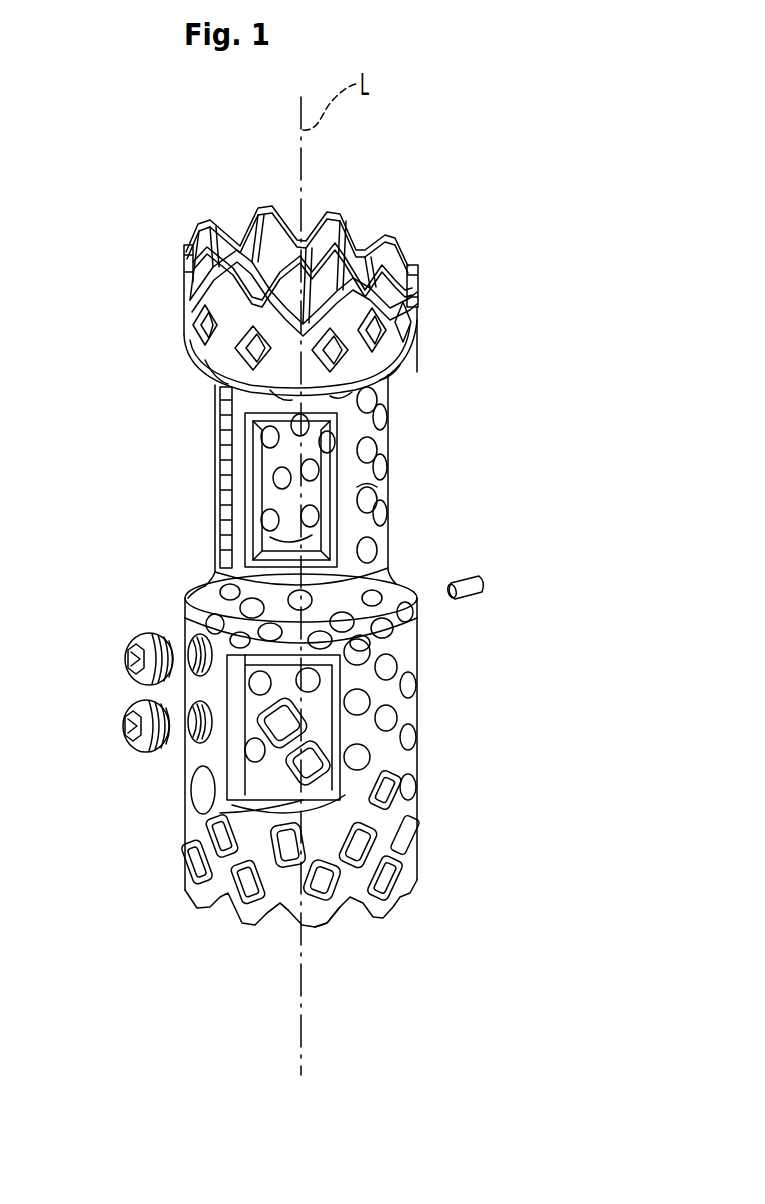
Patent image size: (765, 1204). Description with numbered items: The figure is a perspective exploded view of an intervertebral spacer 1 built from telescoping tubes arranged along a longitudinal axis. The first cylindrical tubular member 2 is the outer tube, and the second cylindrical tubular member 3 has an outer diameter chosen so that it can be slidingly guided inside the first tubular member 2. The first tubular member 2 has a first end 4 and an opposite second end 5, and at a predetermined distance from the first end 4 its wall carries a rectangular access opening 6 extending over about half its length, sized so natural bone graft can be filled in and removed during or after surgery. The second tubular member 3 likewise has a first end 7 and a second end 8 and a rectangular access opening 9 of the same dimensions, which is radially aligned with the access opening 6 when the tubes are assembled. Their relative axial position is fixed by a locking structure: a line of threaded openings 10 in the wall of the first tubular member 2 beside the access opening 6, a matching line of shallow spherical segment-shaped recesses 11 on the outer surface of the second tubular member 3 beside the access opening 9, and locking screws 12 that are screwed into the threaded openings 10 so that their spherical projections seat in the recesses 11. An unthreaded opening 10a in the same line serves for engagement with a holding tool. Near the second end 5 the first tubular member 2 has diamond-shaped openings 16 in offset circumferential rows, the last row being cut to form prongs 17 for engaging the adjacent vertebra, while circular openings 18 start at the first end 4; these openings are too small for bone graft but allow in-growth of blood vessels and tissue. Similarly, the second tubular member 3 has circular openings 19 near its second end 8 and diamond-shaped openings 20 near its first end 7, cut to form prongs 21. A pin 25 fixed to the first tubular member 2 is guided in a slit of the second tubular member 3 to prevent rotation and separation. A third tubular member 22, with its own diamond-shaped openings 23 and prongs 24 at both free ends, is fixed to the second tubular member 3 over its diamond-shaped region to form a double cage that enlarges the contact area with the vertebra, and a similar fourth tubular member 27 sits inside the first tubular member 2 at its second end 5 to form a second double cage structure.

The spacer 1 is at (568, 485).
The first cylindrical tubular member 2 is at (438, 695).
The second cylindrical tubular member 3 is at (408, 452).
The first end 4 is at (207, 598).
The second end 5 is at (250, 933).
The access opening 6 is at (280, 800).
The first end 7 is at (250, 261).
The second end 8 is at (220, 582).
The access opening 9 is at (257, 483).
The threaded openings 10 is at (196, 683).
The unthreaded opening 10a is at (200, 798).
The spherical segment-shaped recesses 11 is at (222, 445).
The locking screws 12 is at (123, 650).
The diamond-shaped openings 16 is at (410, 872).
The prongs 17 is at (328, 930).
The circular openings 18 is at (410, 733).
The circular openings 19 is at (380, 497).
The diamond-shaped openings 20 is at (343, 240).
The prongs 21 is at (240, 255).
The third tubular member 22 is at (434, 308).
The diamond-shaped openings 23 is at (420, 340).
The prongs 24 is at (420, 267).
The pin 25 is at (472, 575).
The fourth tubular member 27 is at (290, 905).